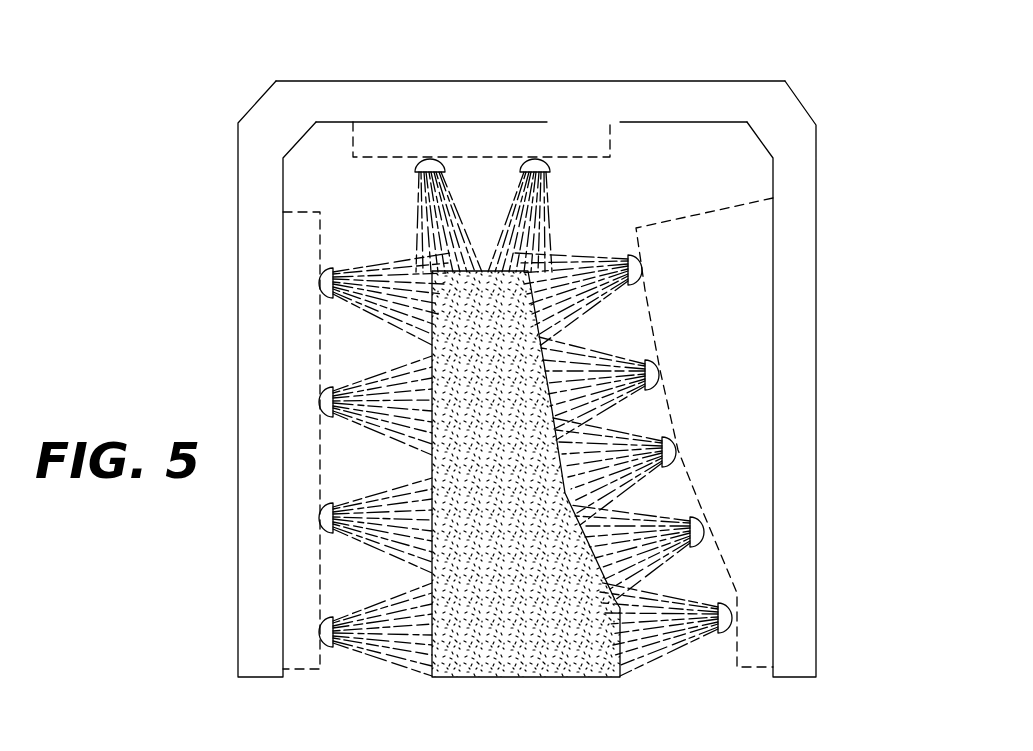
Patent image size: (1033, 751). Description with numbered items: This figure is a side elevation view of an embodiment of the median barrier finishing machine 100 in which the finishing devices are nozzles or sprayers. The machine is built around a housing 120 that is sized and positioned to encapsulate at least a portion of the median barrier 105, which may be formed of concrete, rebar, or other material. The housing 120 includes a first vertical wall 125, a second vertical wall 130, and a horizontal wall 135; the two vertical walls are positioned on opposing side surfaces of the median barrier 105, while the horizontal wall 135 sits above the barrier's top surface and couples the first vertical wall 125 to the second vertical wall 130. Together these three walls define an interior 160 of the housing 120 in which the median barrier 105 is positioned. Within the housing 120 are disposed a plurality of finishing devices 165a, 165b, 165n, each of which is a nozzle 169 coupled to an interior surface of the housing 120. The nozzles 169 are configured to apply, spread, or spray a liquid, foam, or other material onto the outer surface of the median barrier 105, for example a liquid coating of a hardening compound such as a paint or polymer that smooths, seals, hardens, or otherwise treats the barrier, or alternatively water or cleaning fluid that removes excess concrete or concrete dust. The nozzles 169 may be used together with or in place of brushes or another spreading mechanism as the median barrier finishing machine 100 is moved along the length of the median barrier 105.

The median barrier finishing machine 100 is at (886, 642).
The median barrier 105 is at (526, 474).
The housing 120 is at (818, 186).
The first vertical wall 125 is at (238, 346).
The second vertical wall 130 is at (815, 347).
The horizontal wall 135 is at (647, 81).
The interior 160 is at (528, 395).
The finishing device 165a is at (318, 283).
The finishing device 165b is at (552, 164).
The finishing device 165n is at (652, 268).
The nozzle 169 is at (319, 537).